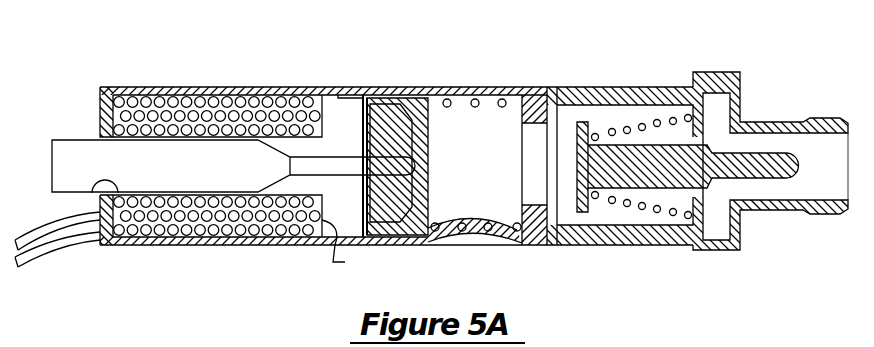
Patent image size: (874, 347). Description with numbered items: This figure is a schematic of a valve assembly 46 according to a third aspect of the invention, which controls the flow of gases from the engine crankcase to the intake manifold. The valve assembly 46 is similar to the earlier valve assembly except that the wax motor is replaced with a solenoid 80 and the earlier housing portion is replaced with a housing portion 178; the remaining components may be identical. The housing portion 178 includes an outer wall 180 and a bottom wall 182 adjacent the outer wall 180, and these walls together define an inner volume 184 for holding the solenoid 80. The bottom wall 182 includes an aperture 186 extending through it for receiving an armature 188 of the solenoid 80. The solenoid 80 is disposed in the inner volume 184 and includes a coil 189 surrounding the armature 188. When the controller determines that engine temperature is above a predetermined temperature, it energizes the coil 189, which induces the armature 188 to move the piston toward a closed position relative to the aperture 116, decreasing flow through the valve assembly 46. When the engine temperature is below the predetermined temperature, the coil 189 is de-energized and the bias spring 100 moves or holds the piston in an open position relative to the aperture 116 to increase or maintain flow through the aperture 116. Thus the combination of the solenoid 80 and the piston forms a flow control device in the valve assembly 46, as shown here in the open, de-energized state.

The valve assembly 46 is at (482, 79).
The solenoid 80 is at (162, 100).
The bias spring 100 is at (448, 238).
The aperture 116 is at (498, 246).
The housing portion 178 is at (247, 246).
The outer wall 180 is at (158, 246).
The bottom wall 182 is at (100, 107).
The inner volume 184 is at (362, 203).
The aperture 186 is at (90, 194).
The armature 188 is at (180, 173).
The coil 189 is at (353, 246).